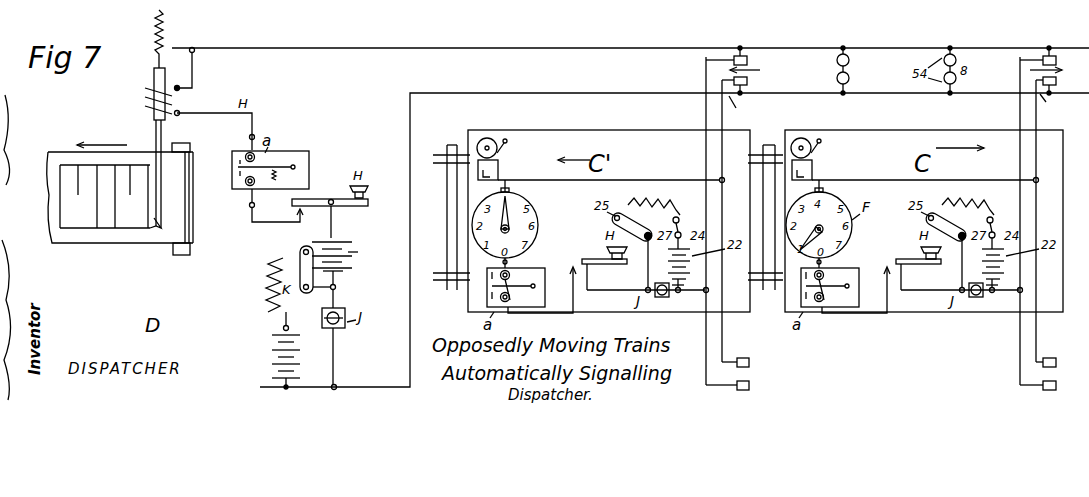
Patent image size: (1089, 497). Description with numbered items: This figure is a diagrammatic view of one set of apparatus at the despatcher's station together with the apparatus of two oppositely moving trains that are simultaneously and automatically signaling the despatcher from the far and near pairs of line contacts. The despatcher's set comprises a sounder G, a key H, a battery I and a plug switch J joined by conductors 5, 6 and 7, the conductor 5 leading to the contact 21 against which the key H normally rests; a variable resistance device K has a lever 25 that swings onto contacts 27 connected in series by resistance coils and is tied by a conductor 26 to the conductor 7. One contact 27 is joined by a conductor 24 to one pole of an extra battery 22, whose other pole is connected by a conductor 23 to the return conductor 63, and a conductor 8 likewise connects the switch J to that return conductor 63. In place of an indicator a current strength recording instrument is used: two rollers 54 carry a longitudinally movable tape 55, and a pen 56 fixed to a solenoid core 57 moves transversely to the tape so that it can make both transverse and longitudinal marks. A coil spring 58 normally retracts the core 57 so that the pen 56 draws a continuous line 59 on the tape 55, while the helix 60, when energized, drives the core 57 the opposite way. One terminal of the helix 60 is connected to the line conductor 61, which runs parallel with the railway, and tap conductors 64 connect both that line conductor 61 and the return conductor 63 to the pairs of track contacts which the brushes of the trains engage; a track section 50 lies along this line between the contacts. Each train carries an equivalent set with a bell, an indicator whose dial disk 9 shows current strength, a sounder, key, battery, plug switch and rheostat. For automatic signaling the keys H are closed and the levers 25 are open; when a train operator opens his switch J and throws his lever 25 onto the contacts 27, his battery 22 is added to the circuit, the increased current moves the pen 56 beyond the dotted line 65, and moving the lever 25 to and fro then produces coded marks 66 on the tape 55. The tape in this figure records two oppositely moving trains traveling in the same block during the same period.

The connecting conductor 5 is at (234, 222).
The connecting conductor 6 is at (337, 232).
The connecting conductor 7 is at (341, 292).
The conductor 8 is at (341, 359).
The disk 9 is at (862, 71).
The contact 21 is at (277, 213).
The battery 22 is at (268, 341).
The conductor 23 is at (243, 378).
The conductor 24 is at (272, 323).
The lever 25 is at (302, 248).
The conductor 26 is at (284, 285).
The contacts 27 is at (298, 323).
The track section 50 is at (996, 62).
The rollers 54 is at (180, 143).
The tape 55 is at (148, 240).
The stylus or pen 56 is at (168, 218).
The solenoid core 57 is at (166, 74).
The coil spring 58 is at (166, 20).
The continuous line 59 is at (66, 160).
The helix 60 is at (150, 101).
The line conductor 61 is at (630, 58).
The return conductor 63 is at (458, 86).
The tap conductors 64 is at (835, 58).
The dotted line 65 is at (69, 252).
The marks 66 is at (104, 196).